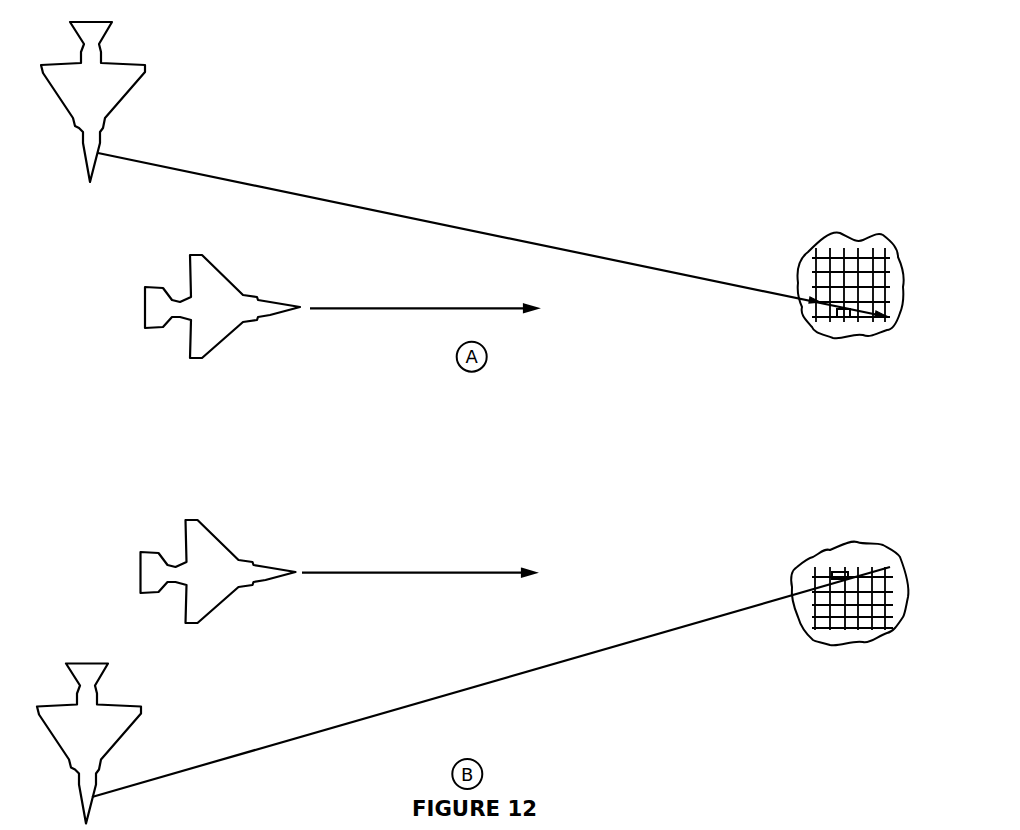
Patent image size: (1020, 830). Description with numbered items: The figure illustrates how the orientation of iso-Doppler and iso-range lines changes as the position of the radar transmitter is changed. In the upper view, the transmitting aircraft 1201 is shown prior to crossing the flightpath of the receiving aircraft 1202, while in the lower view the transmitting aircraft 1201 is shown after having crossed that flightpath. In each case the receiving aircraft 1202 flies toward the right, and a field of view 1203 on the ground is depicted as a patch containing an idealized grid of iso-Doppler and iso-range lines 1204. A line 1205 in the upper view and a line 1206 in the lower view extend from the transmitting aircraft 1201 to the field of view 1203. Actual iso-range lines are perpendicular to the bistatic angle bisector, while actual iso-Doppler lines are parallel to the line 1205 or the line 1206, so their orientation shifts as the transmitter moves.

The transmitting aircraft 1201 is at (105, 137).
The receiving aircraft 1202 is at (271, 301).
The field of view 1203 is at (812, 328).
The iso-Doppler and iso-range lines 1204 is at (828, 257).
The line 1205 is at (430, 222).
The line 1206 is at (462, 692).